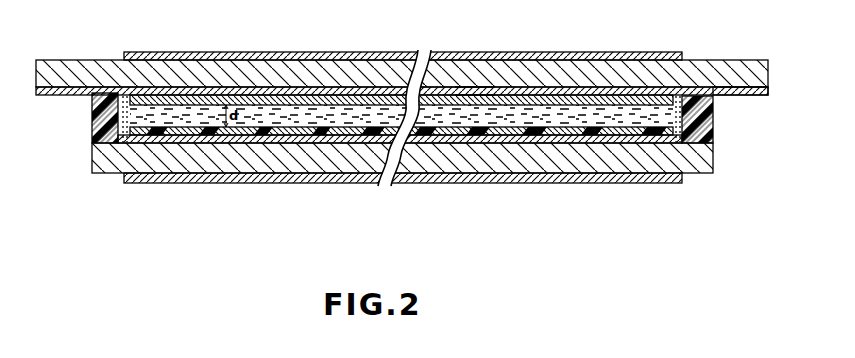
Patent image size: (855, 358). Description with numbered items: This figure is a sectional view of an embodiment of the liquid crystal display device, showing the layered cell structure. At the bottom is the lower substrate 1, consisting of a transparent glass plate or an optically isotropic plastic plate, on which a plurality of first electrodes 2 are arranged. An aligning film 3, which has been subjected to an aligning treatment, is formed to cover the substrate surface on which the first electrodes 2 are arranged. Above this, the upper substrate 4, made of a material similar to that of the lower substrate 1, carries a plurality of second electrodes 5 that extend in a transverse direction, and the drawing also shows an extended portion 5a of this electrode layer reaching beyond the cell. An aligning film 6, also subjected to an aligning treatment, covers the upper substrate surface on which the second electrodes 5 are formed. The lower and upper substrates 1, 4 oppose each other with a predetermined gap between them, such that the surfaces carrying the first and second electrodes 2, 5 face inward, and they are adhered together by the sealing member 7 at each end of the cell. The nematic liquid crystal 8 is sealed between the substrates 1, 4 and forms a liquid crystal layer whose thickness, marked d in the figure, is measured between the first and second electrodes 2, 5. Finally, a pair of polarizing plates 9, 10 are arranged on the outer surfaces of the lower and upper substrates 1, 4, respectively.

The lower substrate 1 is at (102, 166).
The first electrodes 2 is at (183, 145).
The aligning film 3 is at (660, 141).
The upper substrate 4 is at (374, 70).
The second electrodes 5 is at (534, 91).
The electrode terminal portion 5a is at (741, 96).
The aligning film 6 is at (476, 88).
The sealing member 7 is at (94, 110).
The nematic liquid crystal 8 is at (575, 104).
The polarizing plate 9 is at (470, 184).
The polarizing plate 10 is at (641, 56).